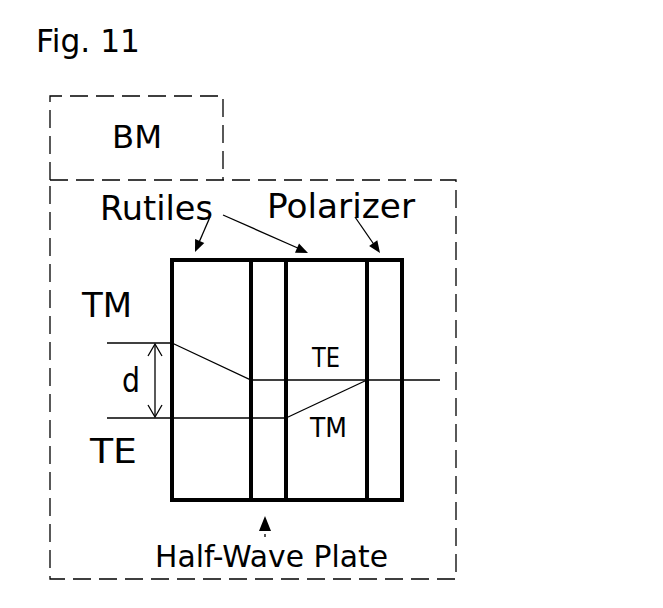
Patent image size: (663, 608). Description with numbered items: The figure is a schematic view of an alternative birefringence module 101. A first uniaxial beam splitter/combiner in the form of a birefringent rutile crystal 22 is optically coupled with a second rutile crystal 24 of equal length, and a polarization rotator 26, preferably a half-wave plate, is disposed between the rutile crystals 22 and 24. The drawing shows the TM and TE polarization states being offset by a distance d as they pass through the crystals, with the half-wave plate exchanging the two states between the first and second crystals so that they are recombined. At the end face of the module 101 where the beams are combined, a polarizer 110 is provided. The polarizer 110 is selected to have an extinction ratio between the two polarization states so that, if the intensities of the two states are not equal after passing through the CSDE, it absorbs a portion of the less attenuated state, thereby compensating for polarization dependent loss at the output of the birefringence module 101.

The rutile crystal 22 is at (197, 473).
The second rutile crystal 24 is at (340, 483).
The polarization rotator 26 is at (270, 483).
The polarizer 110 is at (388, 457).
The birefringence module 101 is at (437, 255).